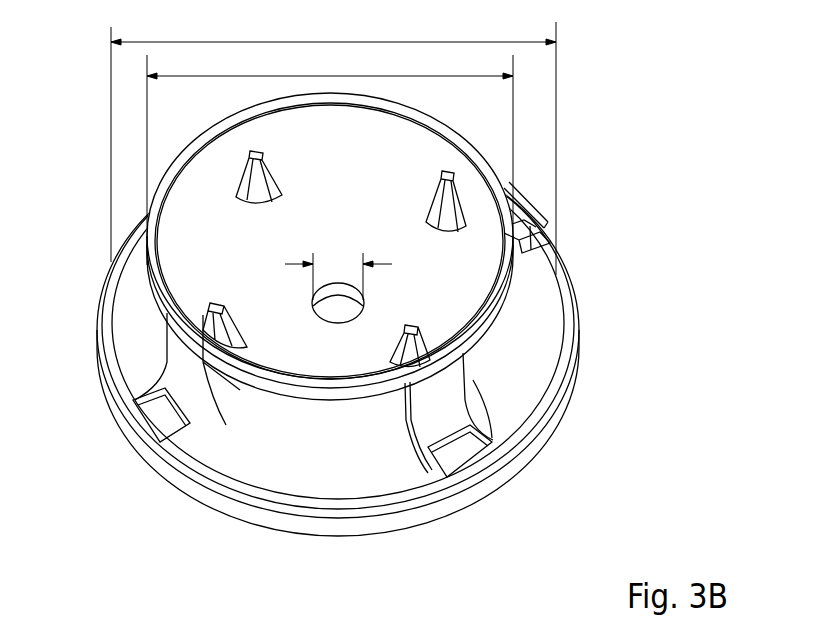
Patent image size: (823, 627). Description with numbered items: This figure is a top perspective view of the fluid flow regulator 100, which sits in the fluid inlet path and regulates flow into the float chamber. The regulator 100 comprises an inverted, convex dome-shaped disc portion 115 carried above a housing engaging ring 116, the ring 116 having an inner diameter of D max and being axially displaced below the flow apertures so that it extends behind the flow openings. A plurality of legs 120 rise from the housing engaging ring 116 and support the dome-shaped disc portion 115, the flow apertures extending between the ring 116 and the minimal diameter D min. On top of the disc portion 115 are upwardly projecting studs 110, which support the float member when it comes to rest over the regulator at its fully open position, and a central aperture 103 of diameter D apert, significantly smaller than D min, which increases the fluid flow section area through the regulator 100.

The fluid flow regulator 100 is at (360, 300).
The upwardly projecting studs 110 is at (456, 198).
The central aperture 103 is at (342, 314).
The dome-shaped disc portion 115 is at (320, 400).
The housing engaging ring 116 is at (574, 388).
The legs 120 is at (187, 370).